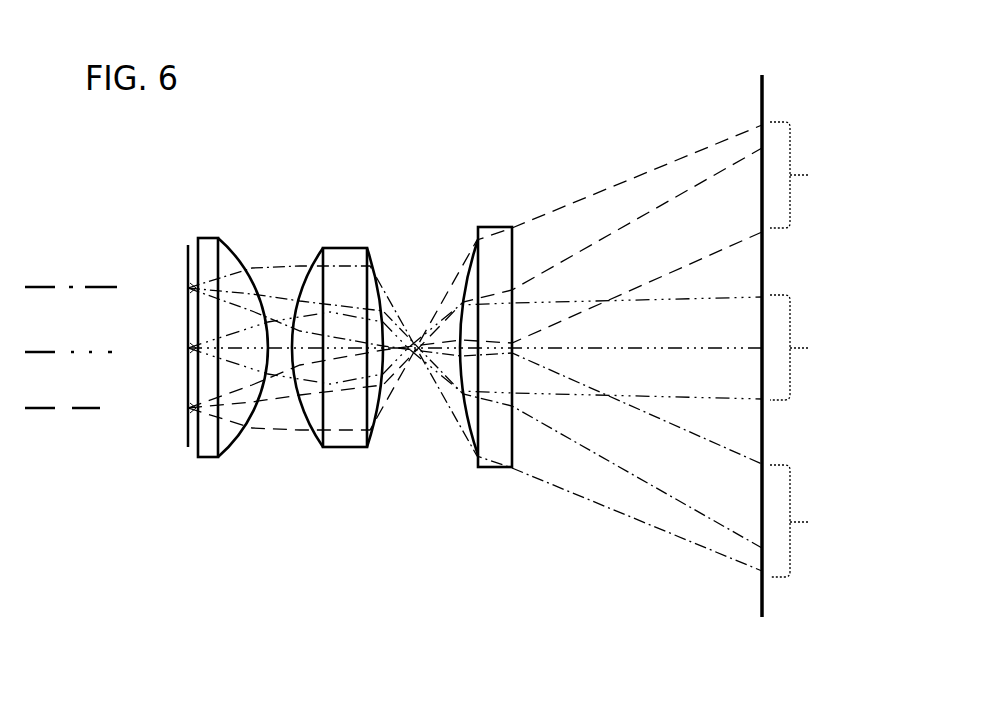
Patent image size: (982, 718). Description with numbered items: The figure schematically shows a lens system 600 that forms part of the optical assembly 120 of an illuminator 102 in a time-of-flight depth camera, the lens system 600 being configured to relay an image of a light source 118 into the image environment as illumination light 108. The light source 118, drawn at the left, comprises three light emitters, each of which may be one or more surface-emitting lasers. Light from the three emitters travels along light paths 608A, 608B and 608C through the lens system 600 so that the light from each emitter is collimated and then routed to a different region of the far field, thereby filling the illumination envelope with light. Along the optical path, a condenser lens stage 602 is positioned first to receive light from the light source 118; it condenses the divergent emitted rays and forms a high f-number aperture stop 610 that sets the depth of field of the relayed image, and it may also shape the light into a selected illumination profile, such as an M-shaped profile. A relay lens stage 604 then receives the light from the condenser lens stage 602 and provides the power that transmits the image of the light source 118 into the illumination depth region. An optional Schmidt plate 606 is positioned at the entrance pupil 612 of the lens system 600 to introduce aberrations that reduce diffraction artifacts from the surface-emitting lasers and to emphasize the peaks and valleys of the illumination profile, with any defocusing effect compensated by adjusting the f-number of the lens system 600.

The illuminator 102 is at (620, 53).
The illumination light 108 is at (668, 557).
The light source 118 is at (188, 250).
The optical assembly 120 is at (276, 164).
The lens system 600 is at (197, 578).
The condenser lens stage 602 is at (277, 478).
The relay lens stage 604 is at (382, 446).
The Schmidt plate 606 is at (495, 470).
The light path 608A is at (439, 421).
The light path 608B is at (439, 347).
The light path 608C is at (439, 276).
The aperture stop 610 is at (409, 266).
The entrance pupil 612 is at (465, 202).